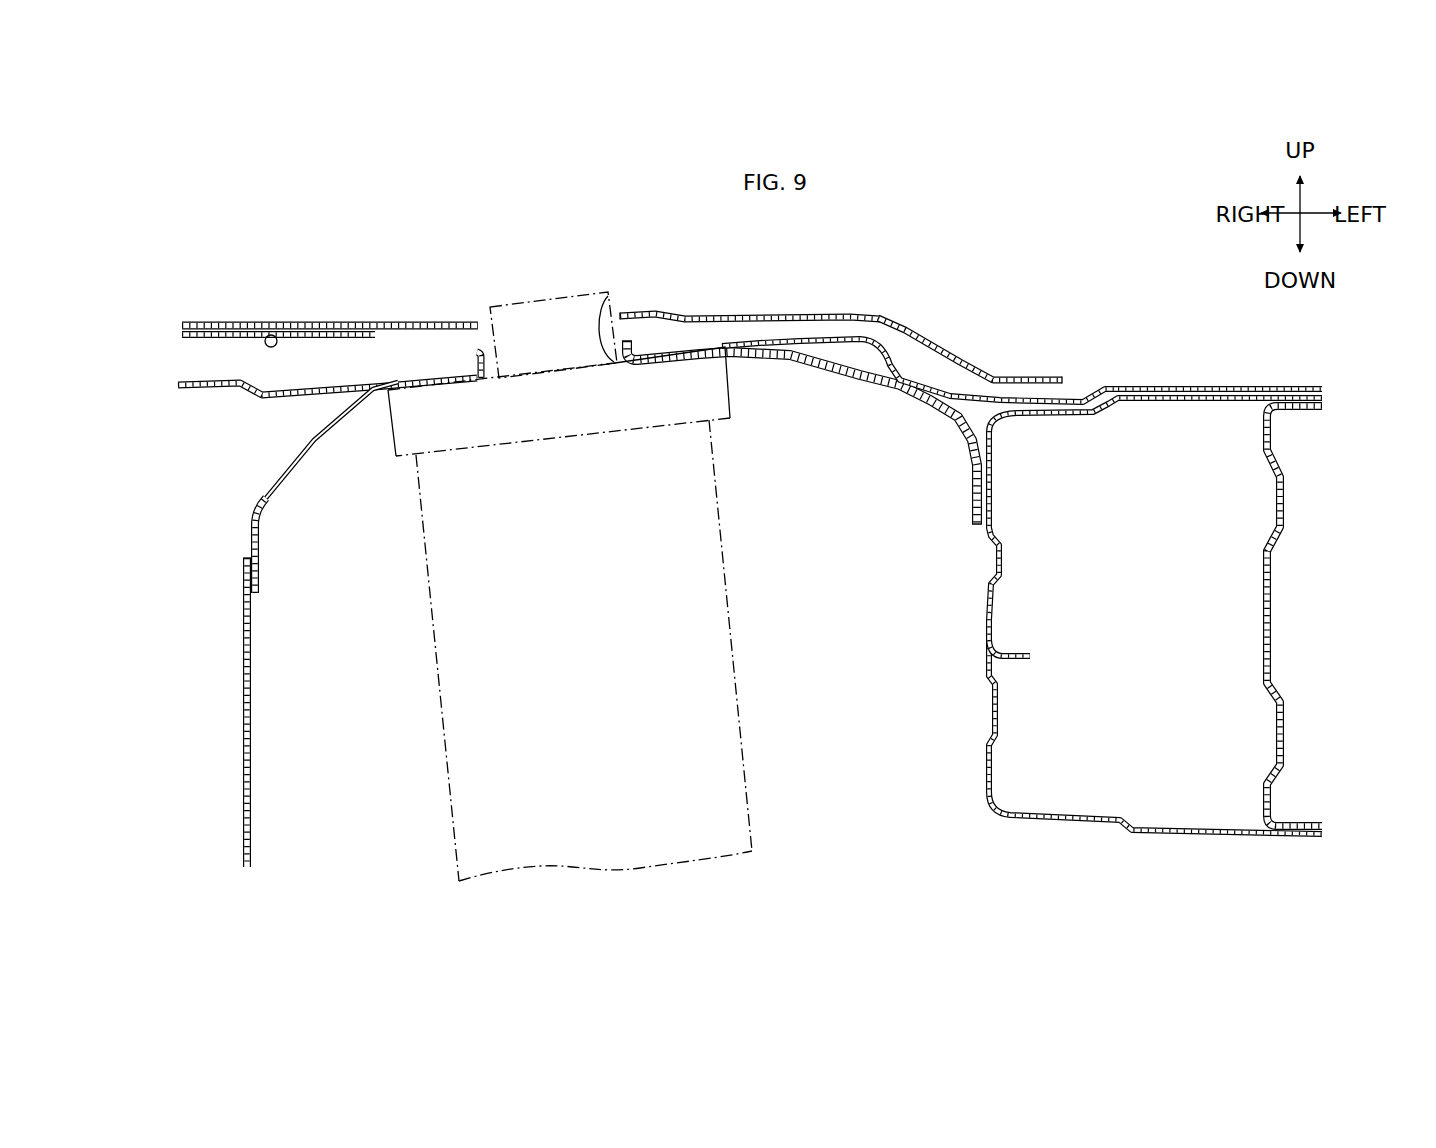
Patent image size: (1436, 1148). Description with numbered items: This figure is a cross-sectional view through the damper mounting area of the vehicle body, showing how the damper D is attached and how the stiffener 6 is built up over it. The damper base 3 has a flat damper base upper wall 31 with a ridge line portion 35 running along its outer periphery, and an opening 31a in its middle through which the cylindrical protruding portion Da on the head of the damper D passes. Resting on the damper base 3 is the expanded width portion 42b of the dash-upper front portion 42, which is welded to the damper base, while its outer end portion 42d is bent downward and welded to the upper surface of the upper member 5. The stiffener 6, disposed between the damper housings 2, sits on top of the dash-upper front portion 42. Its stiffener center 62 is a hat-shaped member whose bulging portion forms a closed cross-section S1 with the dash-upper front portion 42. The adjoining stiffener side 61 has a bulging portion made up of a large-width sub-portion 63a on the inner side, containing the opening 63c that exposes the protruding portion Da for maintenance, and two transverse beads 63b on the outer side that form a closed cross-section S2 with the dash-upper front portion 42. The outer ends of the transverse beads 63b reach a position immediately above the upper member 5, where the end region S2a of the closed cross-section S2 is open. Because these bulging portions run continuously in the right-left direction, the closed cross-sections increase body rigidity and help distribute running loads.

The damper housing 2 is at (240, 726).
The damper base 3 is at (254, 505).
The upper member 5 is at (1270, 619).
The stiffener 6 is at (210, 326).
The damper base upper wall 31 is at (682, 351).
The opening 31a is at (607, 312).
The ridge line portion 35 is at (350, 405).
The dash-upper front portion 42 is at (238, 390).
The expanded width portion 42b is at (780, 338).
The end portion 42d is at (1112, 384).
The stiffener side 61 is at (905, 323).
The stiffener center 62 is at (270, 335).
The large-width sub-portion 63a is at (418, 321).
The transverse bead 63b is at (852, 312).
The opening 63c is at (479, 350).
The damper D is at (735, 590).
The protruding portion Da is at (587, 293).
The closed cross-section S1 is at (294, 372).
The closed cross-section S2 is at (893, 370).
The end region S2a is at (1058, 383).